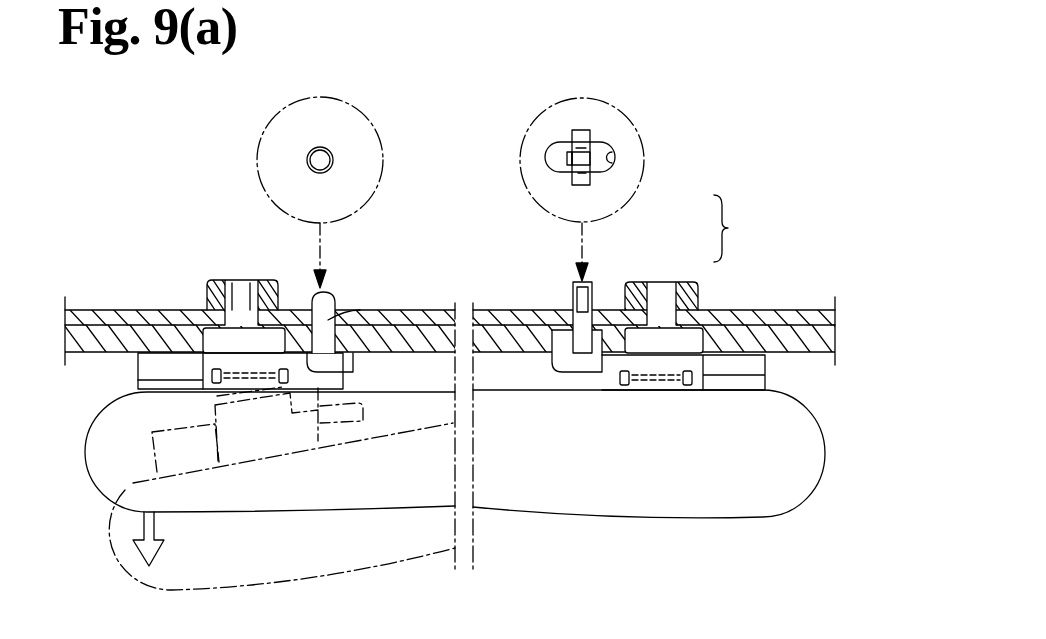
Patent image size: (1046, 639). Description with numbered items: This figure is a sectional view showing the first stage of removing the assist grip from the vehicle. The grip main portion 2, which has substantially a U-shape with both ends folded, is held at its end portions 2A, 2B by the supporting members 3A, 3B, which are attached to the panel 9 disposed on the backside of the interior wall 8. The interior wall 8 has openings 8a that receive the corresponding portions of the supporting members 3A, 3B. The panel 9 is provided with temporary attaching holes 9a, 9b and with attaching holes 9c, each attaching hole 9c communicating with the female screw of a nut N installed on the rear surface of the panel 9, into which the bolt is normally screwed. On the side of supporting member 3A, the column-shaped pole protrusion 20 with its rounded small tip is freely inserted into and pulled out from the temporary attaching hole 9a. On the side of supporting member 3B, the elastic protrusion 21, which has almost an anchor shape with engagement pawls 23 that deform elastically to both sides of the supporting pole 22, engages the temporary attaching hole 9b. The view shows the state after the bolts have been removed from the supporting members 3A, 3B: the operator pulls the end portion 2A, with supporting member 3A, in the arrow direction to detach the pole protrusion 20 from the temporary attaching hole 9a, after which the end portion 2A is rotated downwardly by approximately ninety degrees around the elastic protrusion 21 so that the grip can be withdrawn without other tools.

The panel 9 is at (275, 128).
The temporary attaching hole 9a is at (330, 150).
The temporary attaching hole 9b is at (590, 158).
The attaching hole 9c is at (243, 300).
The interior wall 8 is at (78, 340).
The opening 8a is at (200, 330).
The nut N is at (212, 280).
The pole protrusion 20 is at (328, 165).
The elastic protrusion 21 is at (743, 228).
The supporting pole 22 is at (592, 153).
The engagement pawl 23 is at (585, 185).
The supporting member 3A is at (138, 371).
The supporting member 3B is at (770, 375).
The end portion 2A is at (100, 450).
The end portion 2B is at (800, 466).
The grip main portion 2 is at (453, 513).